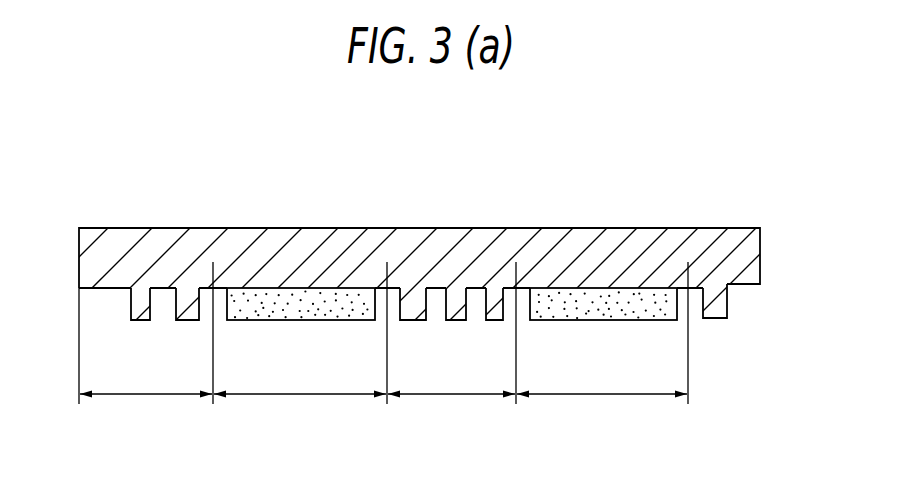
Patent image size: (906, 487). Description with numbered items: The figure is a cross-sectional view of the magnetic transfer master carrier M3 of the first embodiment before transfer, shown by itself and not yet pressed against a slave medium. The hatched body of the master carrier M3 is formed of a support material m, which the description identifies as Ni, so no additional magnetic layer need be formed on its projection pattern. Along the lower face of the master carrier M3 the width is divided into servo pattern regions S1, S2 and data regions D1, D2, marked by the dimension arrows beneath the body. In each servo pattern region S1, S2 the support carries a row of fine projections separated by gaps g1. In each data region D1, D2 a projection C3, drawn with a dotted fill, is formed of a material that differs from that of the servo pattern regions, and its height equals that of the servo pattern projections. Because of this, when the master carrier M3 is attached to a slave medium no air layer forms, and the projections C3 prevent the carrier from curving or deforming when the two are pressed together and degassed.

The magnetic transfer master carrier M3 is at (415, 234).
The mask member m is at (283, 238).
The gap (groove) of mask g1 is at (207, 298).
The projection C3 is at (317, 298).
The servo pattern region S1 is at (146, 342).
The data region D1 is at (300, 342).
The servo pattern region S2 is at (452, 342).
The data region D2 is at (602, 342).